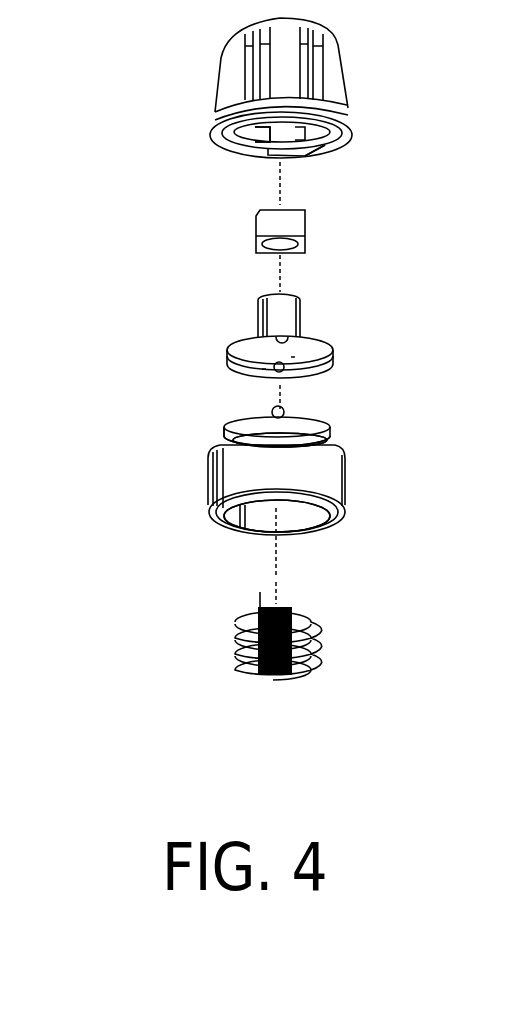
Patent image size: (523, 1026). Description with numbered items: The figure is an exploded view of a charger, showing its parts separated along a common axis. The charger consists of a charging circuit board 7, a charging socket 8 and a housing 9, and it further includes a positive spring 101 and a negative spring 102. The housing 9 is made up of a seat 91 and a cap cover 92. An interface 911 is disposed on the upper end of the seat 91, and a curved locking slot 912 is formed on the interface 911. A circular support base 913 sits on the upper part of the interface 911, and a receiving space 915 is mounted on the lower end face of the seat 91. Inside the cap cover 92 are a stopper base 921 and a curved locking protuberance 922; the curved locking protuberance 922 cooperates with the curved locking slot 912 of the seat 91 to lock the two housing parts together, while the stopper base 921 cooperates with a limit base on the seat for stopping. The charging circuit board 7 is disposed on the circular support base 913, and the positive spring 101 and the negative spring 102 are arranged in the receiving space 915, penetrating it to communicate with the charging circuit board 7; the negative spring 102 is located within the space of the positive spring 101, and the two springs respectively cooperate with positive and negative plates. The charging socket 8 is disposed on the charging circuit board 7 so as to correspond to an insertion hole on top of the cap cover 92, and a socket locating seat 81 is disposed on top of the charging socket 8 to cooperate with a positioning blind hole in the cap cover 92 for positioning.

The charging circuit board 7 is at (207, 370).
The charging socket 8 is at (242, 305).
The socket locating seat 81 is at (256, 222).
The housing 9 is at (97, 625).
The seat 91 is at (208, 485).
The interface 911 is at (323, 440).
The curved locking slot 912 is at (223, 435).
The circular support base 913 is at (320, 427).
The receiving space 915 is at (297, 517).
The cap cover 92 is at (217, 82).
The stopper base 921 is at (270, 143).
The curved locking protuberance 922 is at (312, 148).
The positive spring 101 is at (237, 665).
The negative spring 102 is at (287, 668).